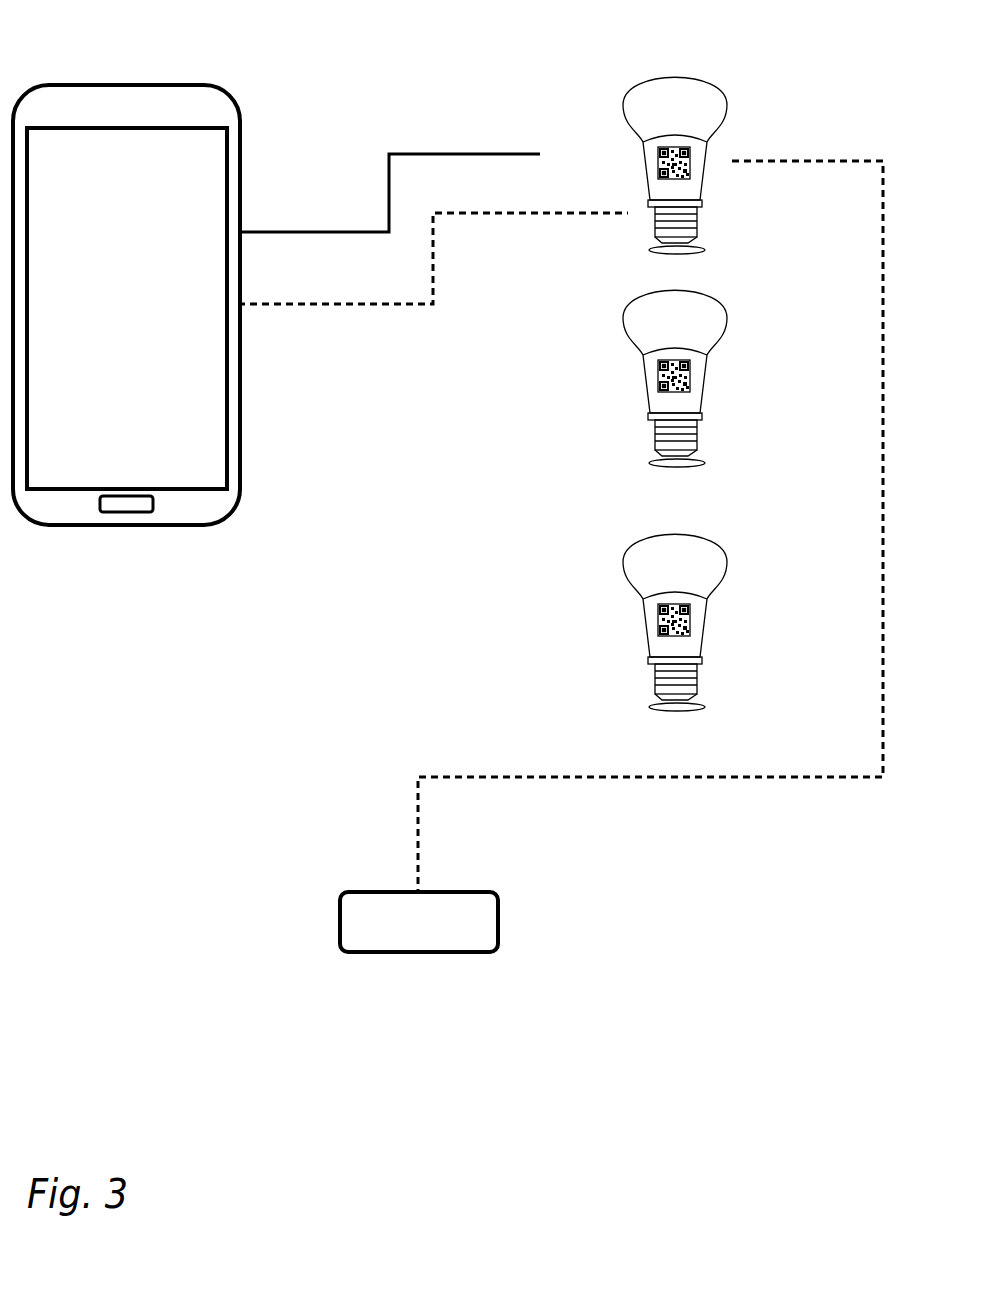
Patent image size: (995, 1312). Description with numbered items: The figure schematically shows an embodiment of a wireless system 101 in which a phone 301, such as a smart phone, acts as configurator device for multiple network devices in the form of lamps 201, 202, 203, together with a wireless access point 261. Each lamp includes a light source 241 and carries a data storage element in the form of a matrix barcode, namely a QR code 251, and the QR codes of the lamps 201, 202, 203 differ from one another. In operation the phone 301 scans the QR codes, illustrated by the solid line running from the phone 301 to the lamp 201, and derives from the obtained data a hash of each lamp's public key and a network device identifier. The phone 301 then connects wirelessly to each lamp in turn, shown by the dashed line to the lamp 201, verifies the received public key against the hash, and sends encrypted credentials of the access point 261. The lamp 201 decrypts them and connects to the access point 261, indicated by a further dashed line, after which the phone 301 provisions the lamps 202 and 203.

The wireless system 101 is at (80, 27).
The phone 301 is at (159, 311).
The lamp 201 is at (690, 165).
The lamp 202 is at (727, 378).
The lamp 203 is at (727, 622).
The light source 241 is at (650, 106).
The QR code 251 is at (655, 166).
The wireless access point 261 is at (419, 922).